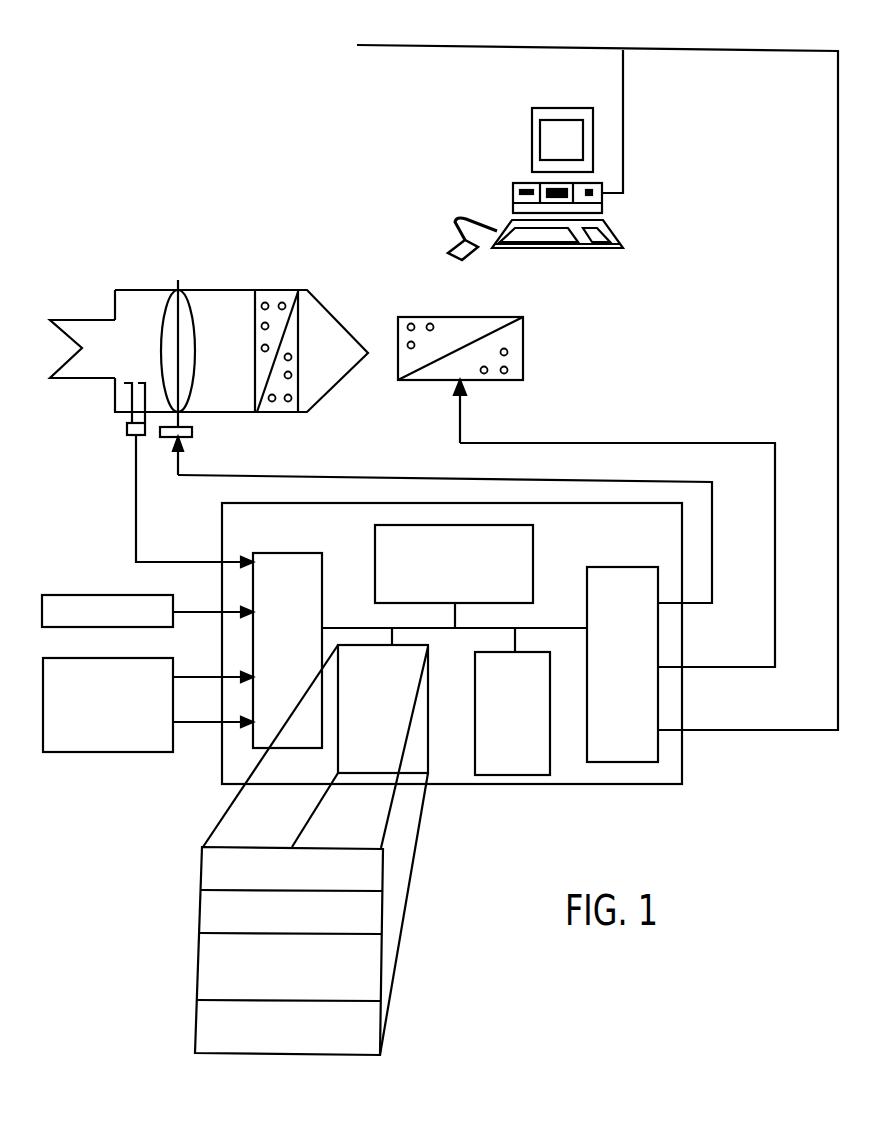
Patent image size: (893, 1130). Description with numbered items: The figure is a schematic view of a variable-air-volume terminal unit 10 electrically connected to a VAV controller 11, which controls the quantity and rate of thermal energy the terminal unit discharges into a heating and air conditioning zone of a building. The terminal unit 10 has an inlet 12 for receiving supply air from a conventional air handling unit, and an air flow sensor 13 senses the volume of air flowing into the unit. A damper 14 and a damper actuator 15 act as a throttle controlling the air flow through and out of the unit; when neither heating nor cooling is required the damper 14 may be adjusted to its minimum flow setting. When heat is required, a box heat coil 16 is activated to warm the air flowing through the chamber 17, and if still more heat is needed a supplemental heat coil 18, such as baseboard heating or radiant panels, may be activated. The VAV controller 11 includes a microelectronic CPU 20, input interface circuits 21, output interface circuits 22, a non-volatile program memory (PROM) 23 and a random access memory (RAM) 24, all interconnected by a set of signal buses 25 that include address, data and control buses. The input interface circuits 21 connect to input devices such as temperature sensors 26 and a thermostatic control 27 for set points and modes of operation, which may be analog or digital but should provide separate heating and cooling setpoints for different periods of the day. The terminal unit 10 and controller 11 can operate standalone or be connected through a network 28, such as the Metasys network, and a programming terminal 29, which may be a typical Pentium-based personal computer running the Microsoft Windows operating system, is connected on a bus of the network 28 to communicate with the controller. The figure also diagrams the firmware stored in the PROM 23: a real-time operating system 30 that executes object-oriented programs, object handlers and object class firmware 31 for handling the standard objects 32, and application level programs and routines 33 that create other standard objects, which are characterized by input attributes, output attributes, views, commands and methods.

The variable-air-volume terminal unit 10 is at (381, 417).
The VAV controller 11 is at (491, 661).
The inlet 12 is at (92, 318).
The air flow sensor 13 is at (127, 430).
The damper 14 is at (196, 315).
The damper actuator 15 is at (192, 432).
The box heat coil 16 is at (270, 415).
The chamber 17 is at (238, 357).
The supplemental heat coil 18 is at (525, 345).
The microelectronic CPU 20 is at (533, 558).
The input interface circuits 21 is at (268, 550).
The output interface circuits 22 is at (615, 565).
The non-volatile program memory (PROM) 23 is at (369, 746).
The random access memory (RAM) 24 is at (498, 749).
The signal buses 25 is at (440, 628).
The temperature sensors 26 is at (110, 593).
The thermostatic control 27 is at (137, 757).
The network 28 is at (723, 48).
The programming terminal 29 is at (512, 144).
The real-time operating system 30 is at (331, 850).
The object handlers and object class firmware 31 is at (380, 985).
The standard objects 32 is at (383, 922).
The application level programs and routines 33 is at (383, 875).